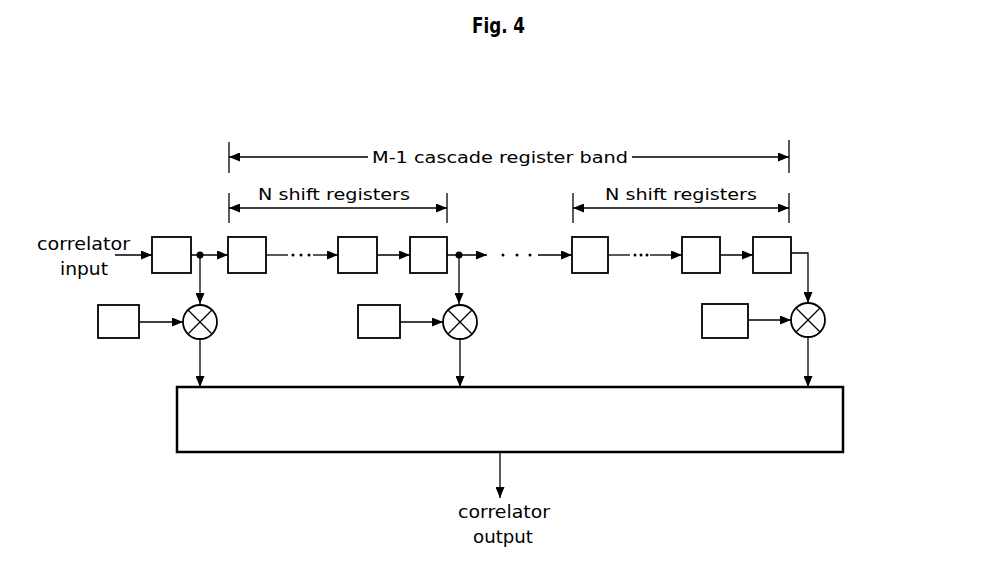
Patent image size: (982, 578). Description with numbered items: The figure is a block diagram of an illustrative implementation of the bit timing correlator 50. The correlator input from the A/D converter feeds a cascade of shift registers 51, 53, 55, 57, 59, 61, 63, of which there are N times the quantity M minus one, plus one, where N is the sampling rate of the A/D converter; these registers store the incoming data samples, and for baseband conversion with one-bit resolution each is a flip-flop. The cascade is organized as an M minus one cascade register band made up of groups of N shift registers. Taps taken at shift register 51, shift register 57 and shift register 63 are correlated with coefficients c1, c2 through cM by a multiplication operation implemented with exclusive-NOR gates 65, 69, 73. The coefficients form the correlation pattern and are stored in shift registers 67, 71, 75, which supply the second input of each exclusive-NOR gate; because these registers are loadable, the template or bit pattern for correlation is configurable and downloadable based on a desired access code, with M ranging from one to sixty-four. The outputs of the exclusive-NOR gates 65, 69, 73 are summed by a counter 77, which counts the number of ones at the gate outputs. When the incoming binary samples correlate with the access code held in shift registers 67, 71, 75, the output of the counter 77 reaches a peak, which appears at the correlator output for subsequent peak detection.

The bit timing correlator 50 is at (690, 107).
The shift register 51 is at (170, 237).
The shift register 53 is at (249, 273).
The shift register 55 is at (341, 273).
The shift register 57 is at (447, 238).
The shift register 59 is at (572, 241).
The shift register 61 is at (683, 273).
The shift register 63 is at (791, 238).
The exclusive-NOR gate 65 is at (213, 334).
The shift register 67 is at (108, 338).
The exclusive-NOR gate 69 is at (473, 334).
The shift register 71 is at (368, 338).
The exclusive-NOR gate 73 is at (821, 332).
The shift register 75 is at (704, 338).
The counter 77 is at (298, 452).